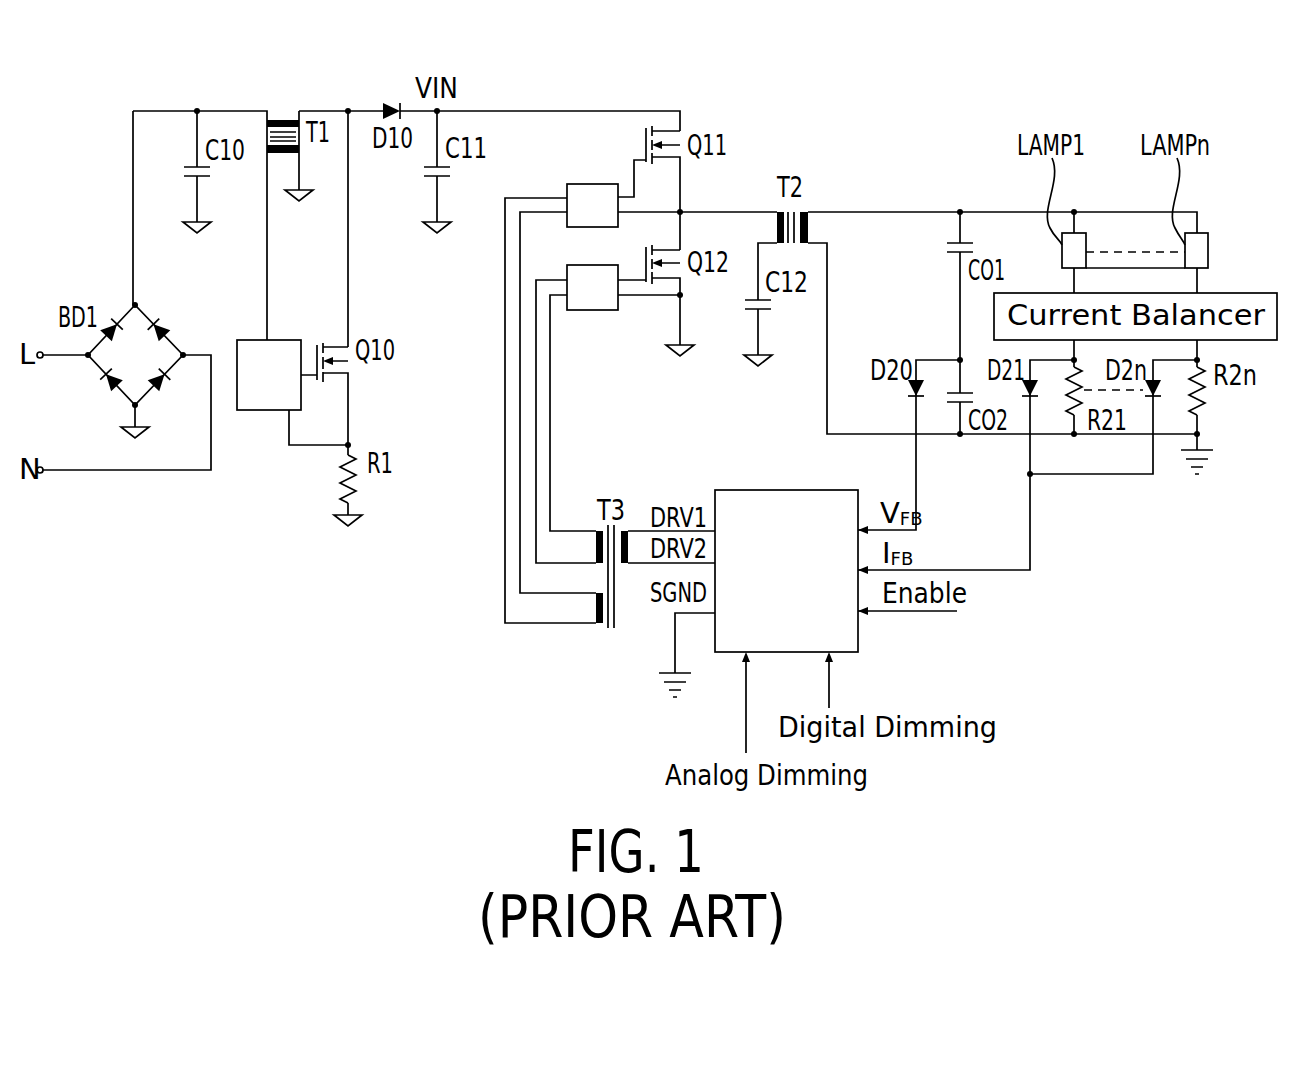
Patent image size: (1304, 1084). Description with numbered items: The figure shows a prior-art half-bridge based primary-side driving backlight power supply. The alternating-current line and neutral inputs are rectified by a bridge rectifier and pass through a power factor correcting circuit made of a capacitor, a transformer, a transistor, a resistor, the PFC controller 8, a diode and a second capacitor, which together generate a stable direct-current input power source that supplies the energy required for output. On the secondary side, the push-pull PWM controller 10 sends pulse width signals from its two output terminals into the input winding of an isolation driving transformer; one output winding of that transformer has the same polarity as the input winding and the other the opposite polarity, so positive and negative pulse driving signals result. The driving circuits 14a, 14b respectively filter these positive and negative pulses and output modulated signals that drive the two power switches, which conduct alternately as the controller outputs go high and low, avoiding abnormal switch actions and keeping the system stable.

The PFC controller 8 is at (265, 410).
The push-pull PWM controller 10 is at (858, 636).
The driving circuit 14a is at (588, 184).
The driving circuit 14b is at (590, 310).